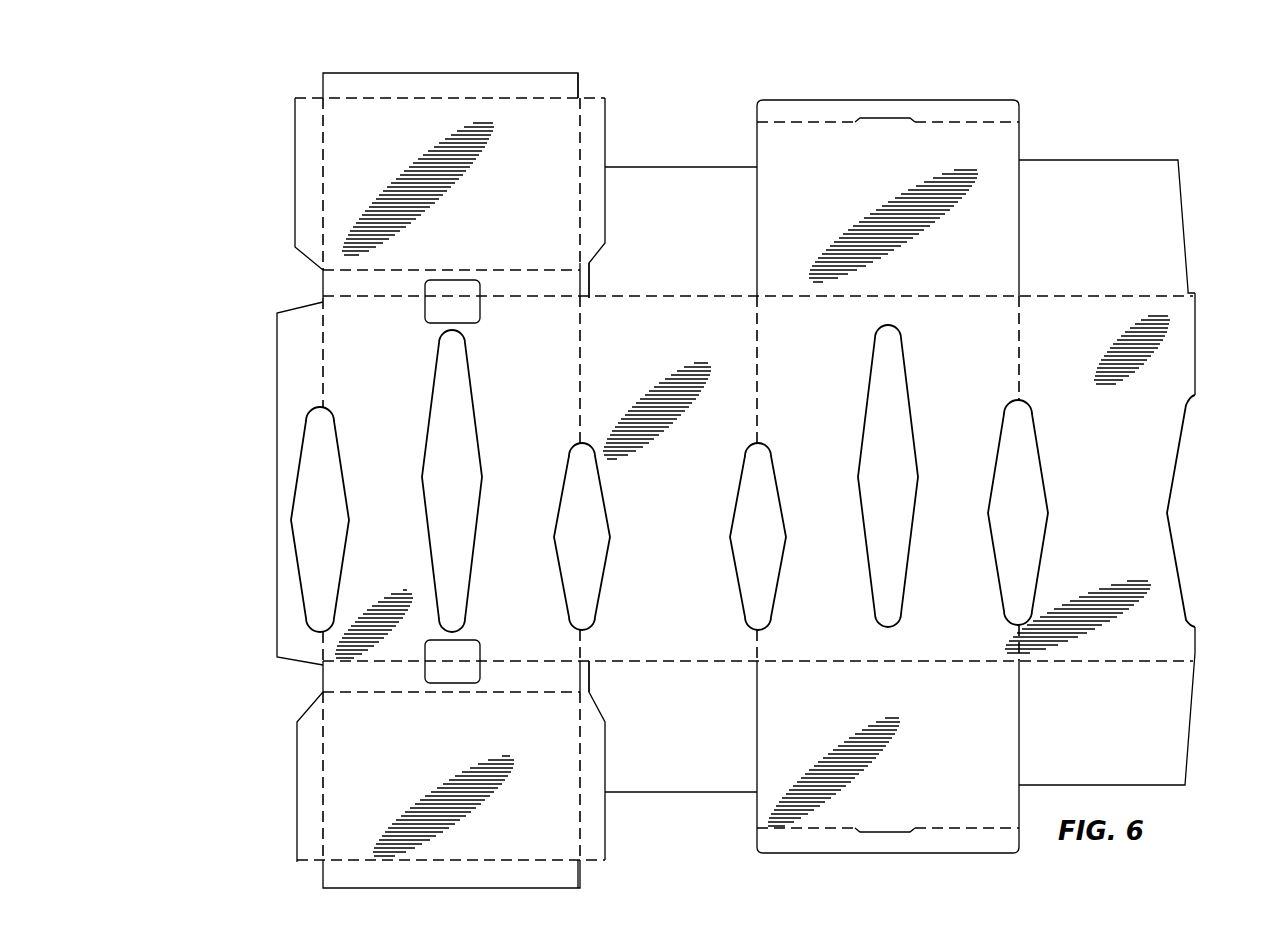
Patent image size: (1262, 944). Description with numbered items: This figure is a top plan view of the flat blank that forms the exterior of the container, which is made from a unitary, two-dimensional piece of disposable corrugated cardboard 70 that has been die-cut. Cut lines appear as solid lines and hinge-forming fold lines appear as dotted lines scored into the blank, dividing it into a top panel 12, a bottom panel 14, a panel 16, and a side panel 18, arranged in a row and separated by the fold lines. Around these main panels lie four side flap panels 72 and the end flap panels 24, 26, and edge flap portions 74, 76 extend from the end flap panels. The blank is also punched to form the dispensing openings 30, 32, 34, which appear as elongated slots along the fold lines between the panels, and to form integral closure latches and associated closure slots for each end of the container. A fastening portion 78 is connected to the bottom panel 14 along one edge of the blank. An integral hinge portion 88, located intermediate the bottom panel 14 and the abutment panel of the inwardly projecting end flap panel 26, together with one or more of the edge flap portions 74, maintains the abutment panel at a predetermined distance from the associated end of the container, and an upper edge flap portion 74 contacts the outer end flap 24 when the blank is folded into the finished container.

The corrugated cardboard 70 is at (707, 156).
The top panel 12 is at (830, 362).
The bottom panel 14 is at (383, 363).
The back panel 16 is at (653, 348).
The side panel 18 is at (1080, 338).
The end flap panel 24 is at (1022, 122).
The end flap panel 26 is at (580, 98).
The dispensing opening 30 is at (475, 403).
The dispensing opening 32 is at (338, 437).
The dispensing opening 34 is at (560, 600).
The side flap panel 72 is at (733, 165).
The edge flap portion 74 is at (355, 73).
The edge flap portion 76 is at (985, 98).
The fastening portion 78 is at (277, 387).
The integral hinge portion 88 is at (323, 288).